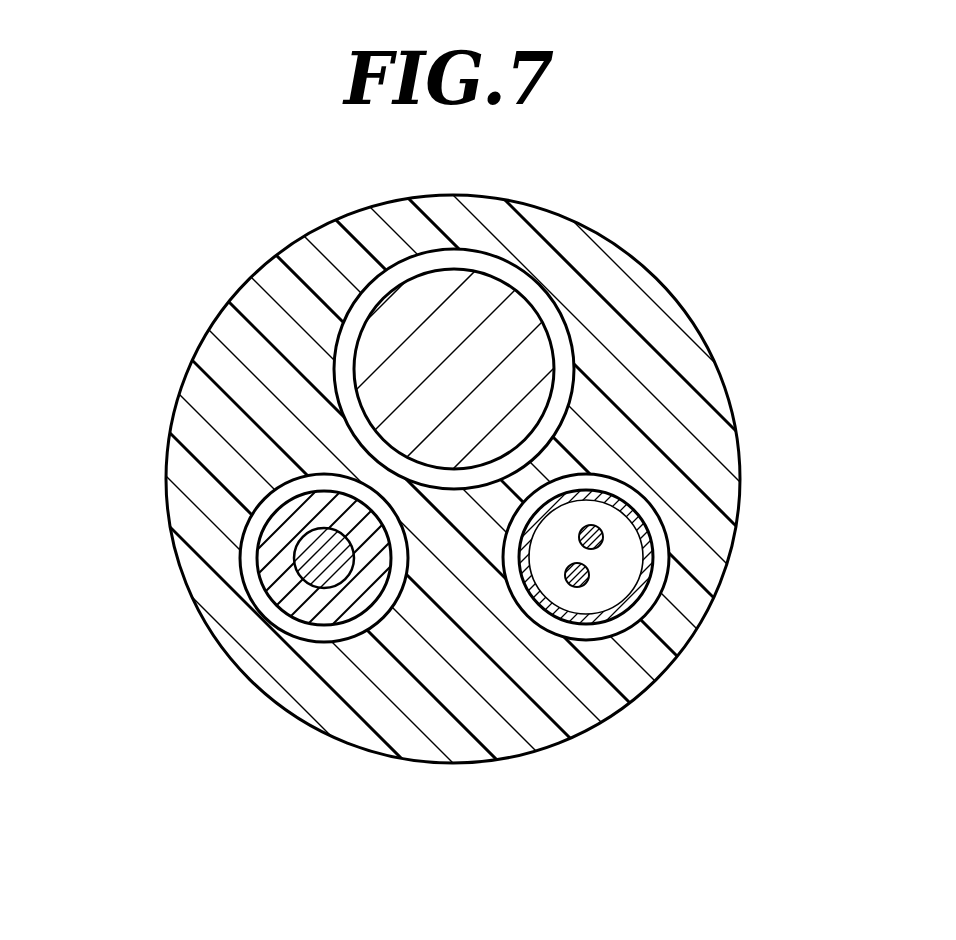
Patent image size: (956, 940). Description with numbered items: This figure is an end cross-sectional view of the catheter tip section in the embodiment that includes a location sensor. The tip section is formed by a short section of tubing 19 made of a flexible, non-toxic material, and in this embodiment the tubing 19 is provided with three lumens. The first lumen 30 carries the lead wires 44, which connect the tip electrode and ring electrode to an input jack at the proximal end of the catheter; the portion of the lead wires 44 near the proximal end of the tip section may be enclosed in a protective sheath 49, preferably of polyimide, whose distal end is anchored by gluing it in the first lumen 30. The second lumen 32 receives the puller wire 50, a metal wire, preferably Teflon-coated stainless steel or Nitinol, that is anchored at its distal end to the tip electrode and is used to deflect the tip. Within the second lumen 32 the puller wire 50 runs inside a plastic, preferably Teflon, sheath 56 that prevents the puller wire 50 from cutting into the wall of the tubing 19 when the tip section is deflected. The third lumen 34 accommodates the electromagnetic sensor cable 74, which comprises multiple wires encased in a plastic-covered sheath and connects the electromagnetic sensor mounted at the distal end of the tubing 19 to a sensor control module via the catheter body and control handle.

The tubing 19 is at (250, 355).
The electromagnetic sensor cable 74 is at (410, 340).
The third lumen 34 is at (543, 308).
The second lumen 32 is at (263, 499).
The puller wire 50 is at (318, 558).
The sheath 56 is at (308, 608).
The first lumen 30 is at (650, 522).
The protective sheath 49 is at (643, 627).
The lead wires 44 is at (589, 578).